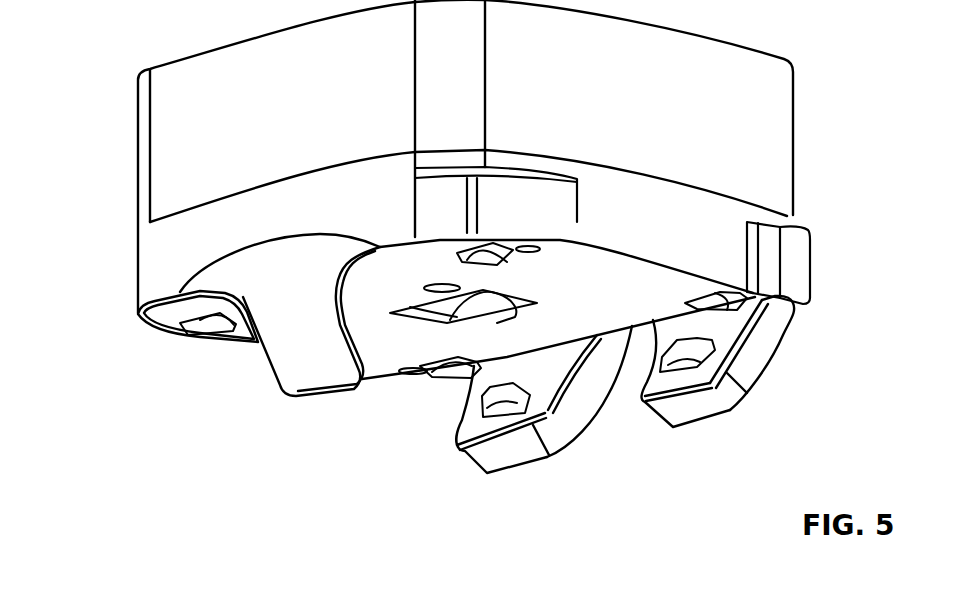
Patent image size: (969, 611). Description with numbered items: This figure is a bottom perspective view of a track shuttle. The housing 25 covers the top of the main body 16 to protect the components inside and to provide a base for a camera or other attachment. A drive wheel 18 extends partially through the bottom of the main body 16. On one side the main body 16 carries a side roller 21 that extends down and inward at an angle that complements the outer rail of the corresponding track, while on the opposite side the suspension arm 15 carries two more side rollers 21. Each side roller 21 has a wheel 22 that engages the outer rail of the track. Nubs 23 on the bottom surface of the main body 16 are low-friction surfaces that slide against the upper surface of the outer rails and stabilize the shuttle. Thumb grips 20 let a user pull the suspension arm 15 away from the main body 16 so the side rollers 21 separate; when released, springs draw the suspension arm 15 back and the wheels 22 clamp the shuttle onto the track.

The suspension arm 15 is at (570, 410).
The main body 16 is at (160, 255).
The drive wheel 18 is at (440, 308).
The thumb grips 20 is at (527, 200).
The side roller 21 is at (290, 368).
The wheel 22 is at (457, 435).
The nubs 23 is at (470, 255).
The housing 25 is at (163, 102).